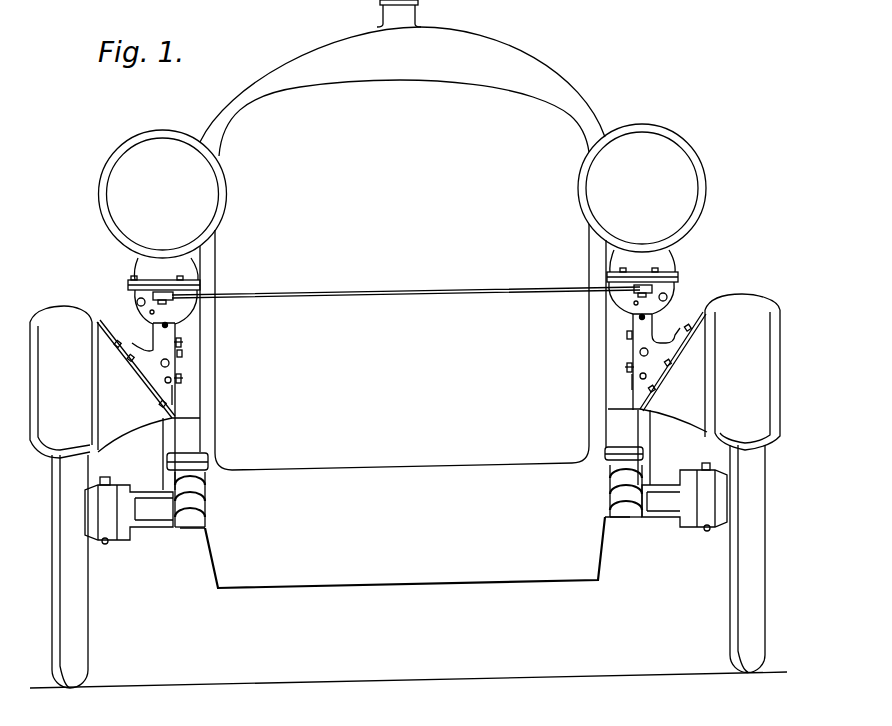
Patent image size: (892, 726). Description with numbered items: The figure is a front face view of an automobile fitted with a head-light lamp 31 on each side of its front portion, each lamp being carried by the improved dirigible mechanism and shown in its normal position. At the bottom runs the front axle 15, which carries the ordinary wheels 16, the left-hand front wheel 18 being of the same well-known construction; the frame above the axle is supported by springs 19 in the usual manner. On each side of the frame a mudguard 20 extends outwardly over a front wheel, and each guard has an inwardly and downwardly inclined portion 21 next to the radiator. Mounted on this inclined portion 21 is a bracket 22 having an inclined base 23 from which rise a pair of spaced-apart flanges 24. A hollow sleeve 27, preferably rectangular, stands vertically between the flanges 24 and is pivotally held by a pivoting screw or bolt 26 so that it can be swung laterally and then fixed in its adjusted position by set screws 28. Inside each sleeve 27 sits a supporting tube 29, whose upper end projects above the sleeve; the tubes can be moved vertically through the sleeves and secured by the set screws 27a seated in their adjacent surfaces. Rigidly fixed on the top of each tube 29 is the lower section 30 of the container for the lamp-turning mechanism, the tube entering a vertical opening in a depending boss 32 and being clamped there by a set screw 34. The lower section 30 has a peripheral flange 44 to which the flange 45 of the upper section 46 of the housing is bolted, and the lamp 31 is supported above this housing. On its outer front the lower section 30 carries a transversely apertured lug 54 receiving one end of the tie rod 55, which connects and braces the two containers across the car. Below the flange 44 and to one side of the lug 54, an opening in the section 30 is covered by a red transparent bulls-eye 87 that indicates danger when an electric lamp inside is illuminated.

The front axle 15 is at (158, 527).
The wheels 16 is at (738, 578).
The left front wheel 18 is at (78, 613).
The springs 19 is at (183, 500).
The mudguard 20 is at (56, 315).
The inclined portion 21 is at (150, 390).
The bracket 22 is at (160, 352).
The inclined base 23 is at (143, 363).
The flanges 24 is at (670, 330).
The pivoting screw or bolt 26 is at (176, 398).
The hollow sleeve 27 is at (183, 354).
The set screws 27a is at (183, 342).
The set screws 28 is at (178, 365).
The supporting tube 29 is at (167, 433).
The lower section of the container 30 is at (196, 306).
The headlight lamp 31 is at (229, 183).
The depending boss 32 is at (178, 331).
The set screw 34 is at (164, 324).
The peripheral flange 44 is at (150, 295).
The flange 45 is at (200, 284).
The upper section of the housing 46 is at (186, 268).
The transversely apertured lug 54 is at (150, 312).
The tie rod 55 is at (410, 291).
The bulls-eye 87 is at (140, 298).